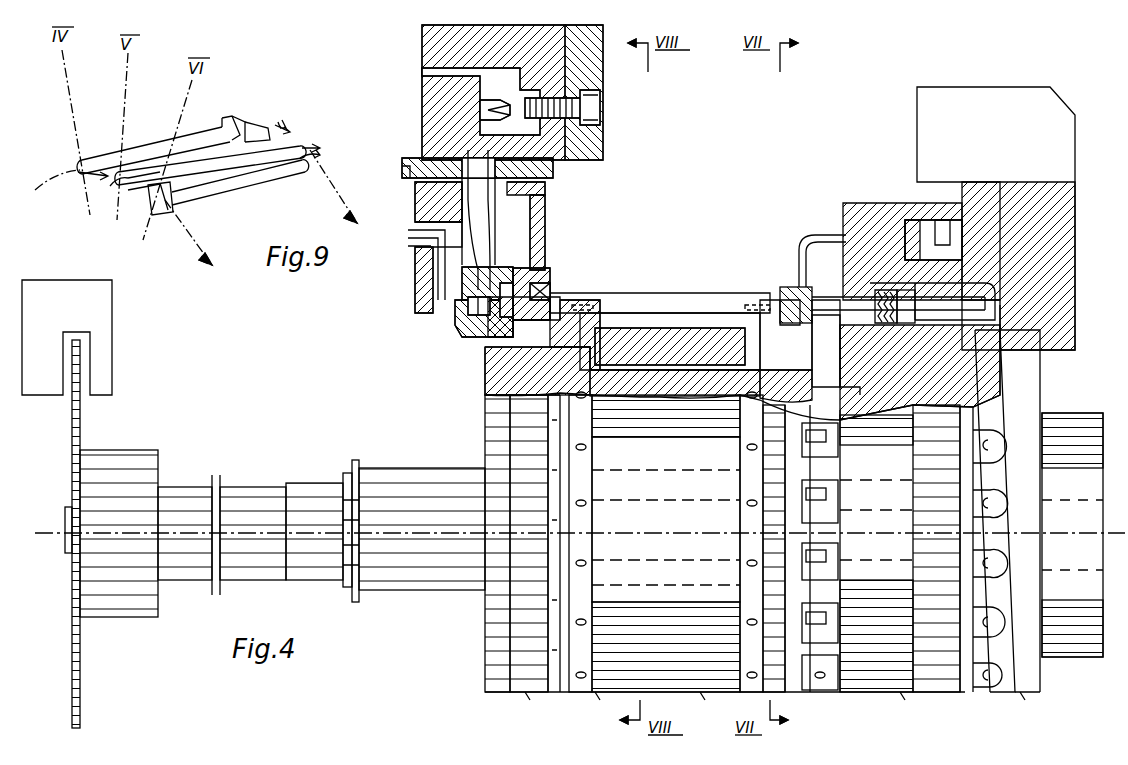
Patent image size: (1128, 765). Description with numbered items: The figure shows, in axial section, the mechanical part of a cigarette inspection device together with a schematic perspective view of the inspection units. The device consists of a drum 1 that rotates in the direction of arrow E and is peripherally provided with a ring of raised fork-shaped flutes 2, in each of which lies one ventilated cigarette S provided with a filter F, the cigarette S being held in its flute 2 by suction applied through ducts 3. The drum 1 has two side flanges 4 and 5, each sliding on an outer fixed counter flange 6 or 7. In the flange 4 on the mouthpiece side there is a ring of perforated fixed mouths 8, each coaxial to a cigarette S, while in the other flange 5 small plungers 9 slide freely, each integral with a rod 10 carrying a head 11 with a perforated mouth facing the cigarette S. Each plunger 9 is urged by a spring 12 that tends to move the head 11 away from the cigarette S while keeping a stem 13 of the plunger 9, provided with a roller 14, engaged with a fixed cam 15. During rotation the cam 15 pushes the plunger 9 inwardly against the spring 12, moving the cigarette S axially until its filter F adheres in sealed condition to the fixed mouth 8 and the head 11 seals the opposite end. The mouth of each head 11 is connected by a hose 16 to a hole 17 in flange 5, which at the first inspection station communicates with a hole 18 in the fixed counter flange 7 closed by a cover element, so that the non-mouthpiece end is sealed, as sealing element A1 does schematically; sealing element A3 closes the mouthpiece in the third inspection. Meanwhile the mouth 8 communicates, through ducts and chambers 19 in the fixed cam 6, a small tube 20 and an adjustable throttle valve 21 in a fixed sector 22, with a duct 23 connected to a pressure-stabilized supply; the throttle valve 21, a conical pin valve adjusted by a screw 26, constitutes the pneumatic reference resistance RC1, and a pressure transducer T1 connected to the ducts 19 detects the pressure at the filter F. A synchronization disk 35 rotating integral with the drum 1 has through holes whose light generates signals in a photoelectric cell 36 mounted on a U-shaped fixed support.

In FIG. 4, the drum 1 is at (600, 685).
In FIG. 4, the fork-shaped flutes 2 is at (592, 563).
In FIG. 4, the ducts 3 is at (665, 400).
In FIG. 4, the side flange 4 is at (548, 282).
In FIG. 4, the side flange 5 is at (845, 207).
In FIG. 4, the fixed counter flange 6 is at (468, 335).
In FIG. 4, the fixed counter flange 7 is at (1065, 225).
In FIG. 4, the fixed mouth 8 is at (552, 290).
In FIG. 4, the plunger 9 is at (842, 350).
In FIG. 4, the rod 10 is at (832, 315).
In FIG. 4, the head 11 is at (822, 450).
In FIG. 4, the spring 12 is at (886, 290).
In FIG. 4, the stem 13 is at (995, 515).
In FIG. 4, the roller 14 is at (1005, 505).
In FIG. 4, the fixed cam 15 is at (1030, 378).
In FIG. 4, the hose 16 is at (838, 503).
In FIG. 4, the hole 17 is at (858, 235).
In FIG. 4, the hole 18 is at (938, 205).
In FIG. 4, the ducts and chambers 19 is at (472, 342).
In FIG. 4, the small tube 20 is at (492, 215).
In FIG. 4, the adjustable throttle valve 21 is at (470, 130).
In FIG. 4, the fixed sector 22 is at (432, 145).
In FIG. 4, the duct 23 is at (440, 68).
In FIG. 4, the screw 26 is at (585, 143).
In FIG. 4, the synchronization disk 35 is at (80, 668).
In FIG. 4, the photoelectric cell 36 is at (104, 318).
In FIG. 9, the sealing element A1 is at (232, 116).
In FIG. 9, the sealing element A3 is at (163, 212).
In FIG. 9, the direction of rotation arrow E is at (185, 255).
In FIG. 9, the filter F is at (185, 194).
In FIG. 4, the filter F is at (600, 300).
In FIG. 9, the cigarette S is at (262, 174).
In FIG. 4, the cigarette S is at (680, 298).
In FIG. 4, the pressure transducer T1 is at (455, 322).
In FIG. 4, the pneumatic reference resistance RC1 is at (480, 100).